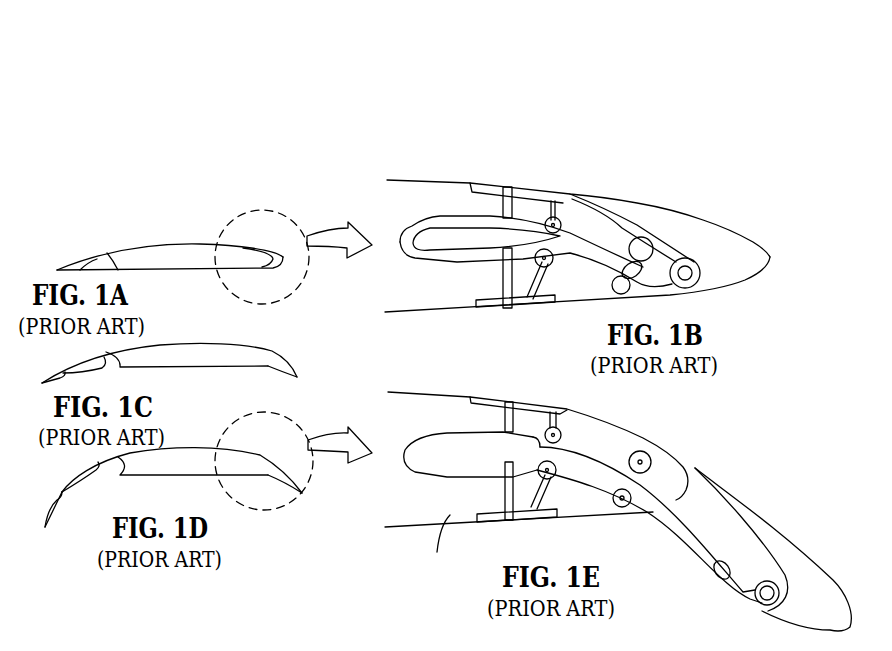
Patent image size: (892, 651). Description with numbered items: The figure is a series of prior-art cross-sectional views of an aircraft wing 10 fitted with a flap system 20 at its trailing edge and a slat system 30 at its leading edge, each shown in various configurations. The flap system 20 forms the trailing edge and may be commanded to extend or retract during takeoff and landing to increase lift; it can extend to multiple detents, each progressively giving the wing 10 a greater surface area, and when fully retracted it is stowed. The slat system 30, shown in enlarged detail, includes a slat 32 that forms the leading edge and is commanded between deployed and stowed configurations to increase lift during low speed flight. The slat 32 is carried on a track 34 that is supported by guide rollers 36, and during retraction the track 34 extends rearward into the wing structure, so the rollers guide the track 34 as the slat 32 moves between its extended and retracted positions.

In FIG. 1A, the aircraft wing 10 is at (217, 75).
In FIG. 1A, the flap system 20 is at (130, 222).
In FIG. 1A, the slat system 30 is at (255, 241).
In FIG. 1B, the slat system 30 is at (667, 168).
In FIG. 1E, the slat 32 is at (788, 532).
In FIG. 1E, the track 34 is at (690, 545).
In FIG. 1E, the guide rollers 36 is at (647, 450).